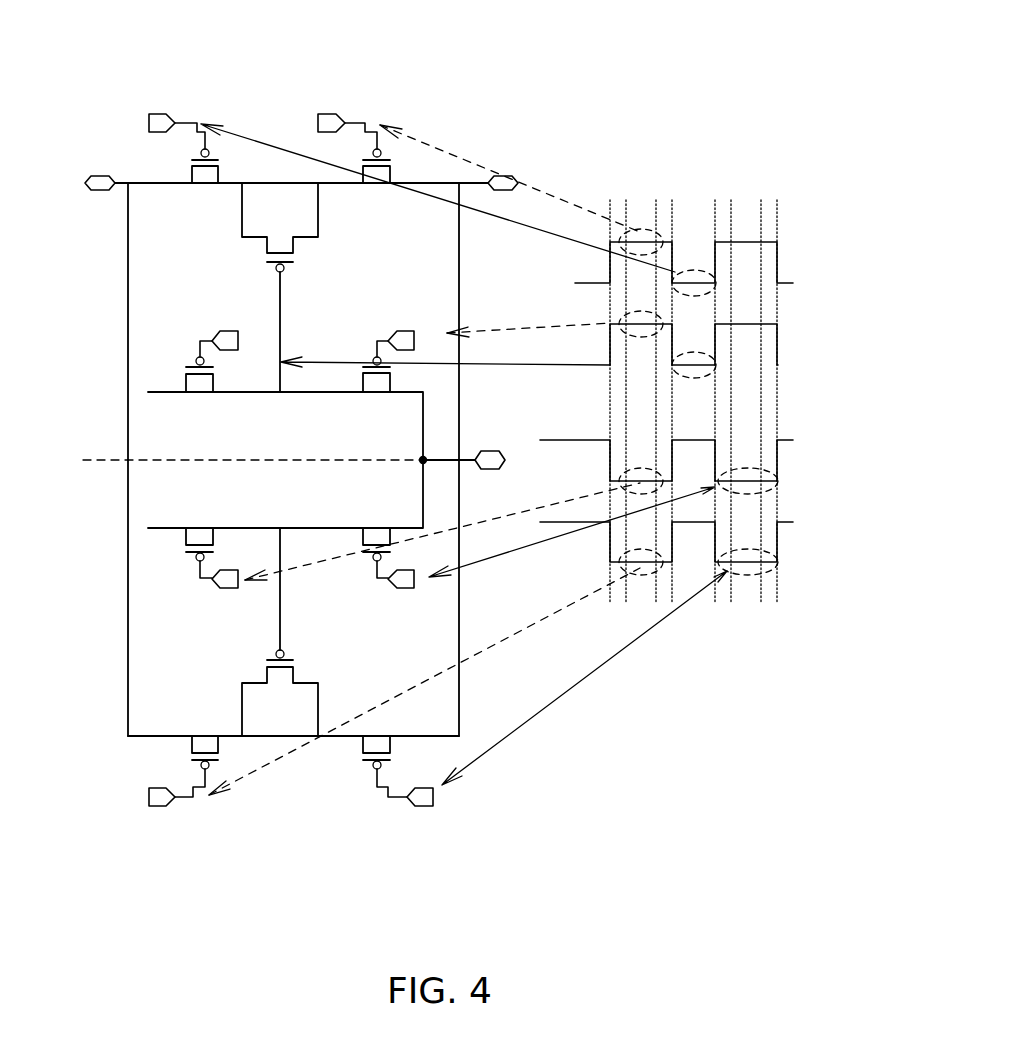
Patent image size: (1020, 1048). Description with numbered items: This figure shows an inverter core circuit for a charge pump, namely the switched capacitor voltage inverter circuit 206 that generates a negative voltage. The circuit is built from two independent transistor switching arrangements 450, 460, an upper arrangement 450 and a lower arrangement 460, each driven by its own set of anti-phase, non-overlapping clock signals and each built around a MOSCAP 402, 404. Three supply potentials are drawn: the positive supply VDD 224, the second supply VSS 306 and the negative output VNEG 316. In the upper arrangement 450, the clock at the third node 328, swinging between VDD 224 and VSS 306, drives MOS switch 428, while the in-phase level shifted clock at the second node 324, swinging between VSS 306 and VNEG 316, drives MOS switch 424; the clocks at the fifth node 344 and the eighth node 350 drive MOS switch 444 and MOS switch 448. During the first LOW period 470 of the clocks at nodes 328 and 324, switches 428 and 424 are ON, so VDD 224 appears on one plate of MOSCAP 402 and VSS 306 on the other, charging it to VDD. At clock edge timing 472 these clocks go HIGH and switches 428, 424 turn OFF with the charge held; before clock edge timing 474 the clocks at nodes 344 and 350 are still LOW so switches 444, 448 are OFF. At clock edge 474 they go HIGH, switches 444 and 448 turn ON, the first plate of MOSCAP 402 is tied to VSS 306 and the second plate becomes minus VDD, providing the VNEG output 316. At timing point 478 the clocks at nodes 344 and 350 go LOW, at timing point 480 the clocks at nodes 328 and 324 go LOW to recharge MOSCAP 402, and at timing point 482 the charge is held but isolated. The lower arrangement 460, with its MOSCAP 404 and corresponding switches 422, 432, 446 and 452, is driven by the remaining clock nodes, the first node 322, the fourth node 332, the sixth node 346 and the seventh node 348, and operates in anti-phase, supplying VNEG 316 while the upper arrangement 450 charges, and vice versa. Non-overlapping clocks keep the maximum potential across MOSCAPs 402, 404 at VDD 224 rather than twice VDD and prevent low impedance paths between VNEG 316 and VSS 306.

The switched capacitor voltage inverter circuit 206 is at (557, 72).
The positive supply VDD 224 is at (100, 191).
The second supply VSS 306 is at (503, 175).
The third supply VNEG 316 is at (490, 450).
The first node 322 is at (400, 570).
The second node 324 is at (228, 351).
The third node 328 is at (158, 133).
The fourth node 332 is at (435, 797).
The fifth node 344 is at (318, 124).
The sixth node 346 is at (150, 788).
The seventh node 348 is at (225, 570).
The eighth node 350 is at (415, 340).
The MOSCAP 402 is at (280, 246).
The MOSCAP 404 is at (280, 672).
The transistor 422 is at (375, 527).
The MOS switch 424 is at (197, 380).
The MOS switch 428 is at (205, 188).
The transistor 432 is at (374, 737).
The MOS switch 444 is at (377, 188).
The transistor 446 is at (205, 735).
The MOS switch 448 is at (375, 380).
The first independent transistor switching arrangement 450 is at (86, 350).
The transistor 452 is at (197, 527).
The second independent transistor switching arrangement 460 is at (86, 588).
The first LOW period 470 is at (576, 283).
The clock edge timing 472 is at (610, 212).
The clock edge timing 474 is at (626, 212).
The timing point 478 is at (656, 212).
The timing point 480 is at (672, 215).
The timing point 482 is at (715, 215).